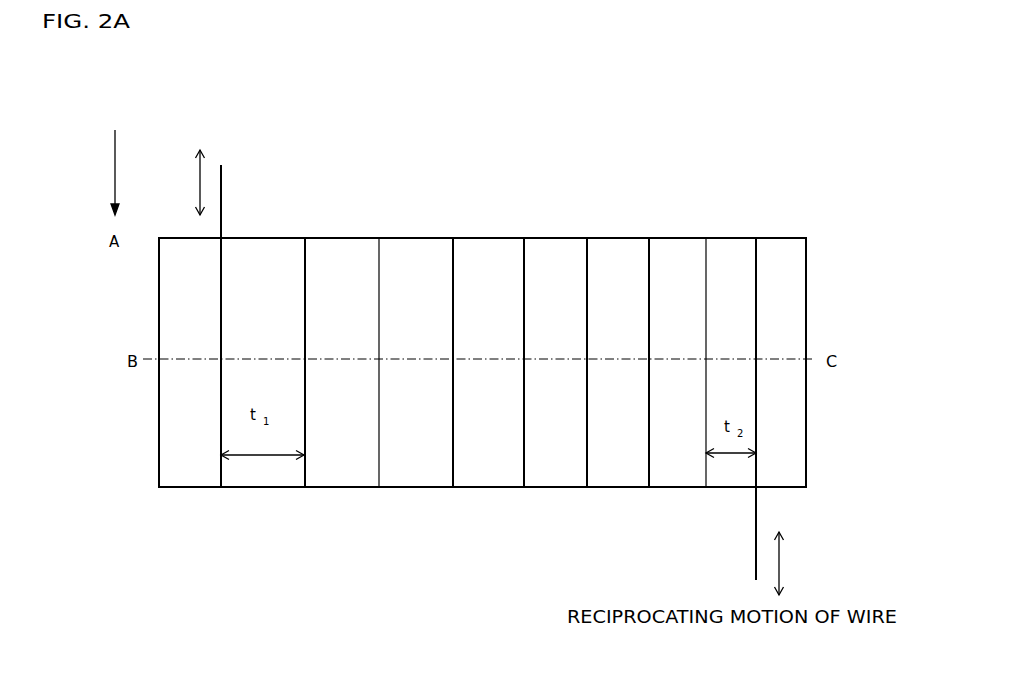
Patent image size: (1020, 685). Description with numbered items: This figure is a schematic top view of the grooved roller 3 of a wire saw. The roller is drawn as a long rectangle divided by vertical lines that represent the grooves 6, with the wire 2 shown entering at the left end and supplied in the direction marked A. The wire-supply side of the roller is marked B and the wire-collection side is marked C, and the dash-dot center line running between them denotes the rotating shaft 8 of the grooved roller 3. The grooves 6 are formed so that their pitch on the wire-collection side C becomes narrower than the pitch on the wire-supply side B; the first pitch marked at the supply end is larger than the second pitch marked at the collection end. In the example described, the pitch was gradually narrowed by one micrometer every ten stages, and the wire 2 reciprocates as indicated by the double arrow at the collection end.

The wire 2 is at (221, 186).
The grooved roller 3 is at (462, 184).
The grooves 6 is at (708, 234).
The rotating shaft 8 is at (421, 360).